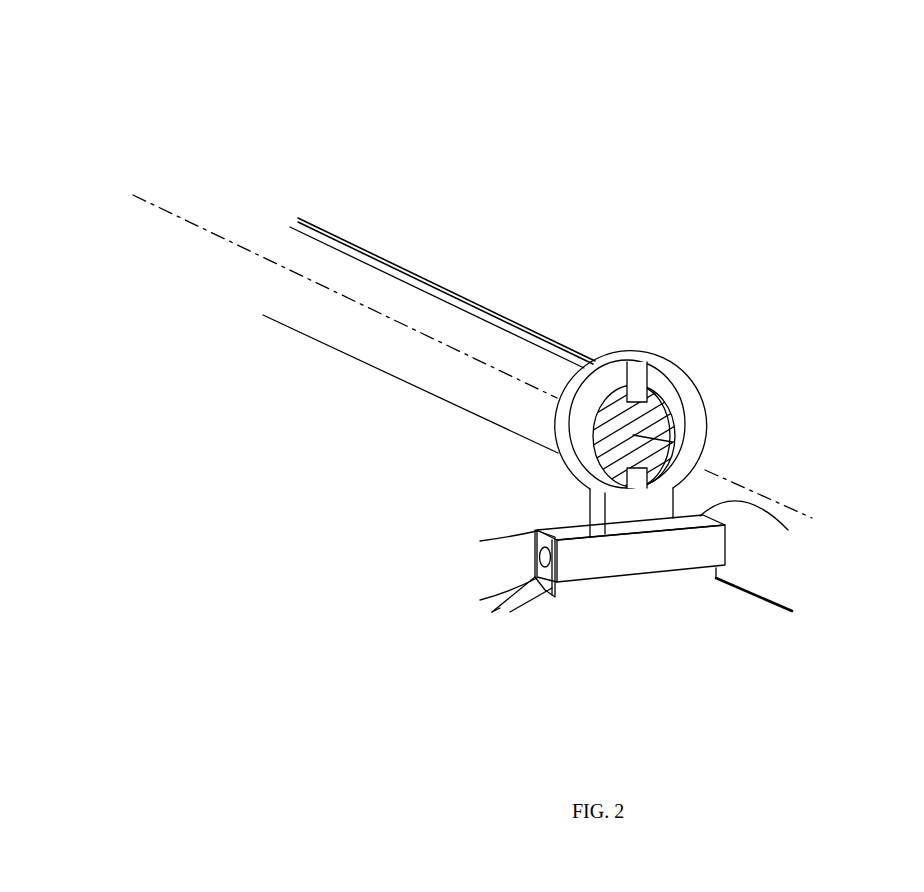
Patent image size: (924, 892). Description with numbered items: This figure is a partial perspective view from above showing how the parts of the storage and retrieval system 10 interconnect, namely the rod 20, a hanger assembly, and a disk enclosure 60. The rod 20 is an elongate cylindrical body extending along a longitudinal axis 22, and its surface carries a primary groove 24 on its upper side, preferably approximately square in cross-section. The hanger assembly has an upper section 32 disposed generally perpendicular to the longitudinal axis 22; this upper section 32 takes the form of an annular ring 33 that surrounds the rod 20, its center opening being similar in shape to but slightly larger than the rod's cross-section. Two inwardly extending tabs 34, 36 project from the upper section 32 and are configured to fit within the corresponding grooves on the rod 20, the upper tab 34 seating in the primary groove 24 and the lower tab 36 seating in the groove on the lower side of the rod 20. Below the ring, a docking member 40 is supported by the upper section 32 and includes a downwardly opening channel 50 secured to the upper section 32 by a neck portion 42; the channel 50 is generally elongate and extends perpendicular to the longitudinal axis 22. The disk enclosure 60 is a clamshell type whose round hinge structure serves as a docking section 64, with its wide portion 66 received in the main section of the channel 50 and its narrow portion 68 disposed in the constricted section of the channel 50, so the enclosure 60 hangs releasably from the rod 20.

The storage and retrieval system 10 is at (556, 180).
The rod 20 is at (367, 283).
The longitudinal axis 22 is at (778, 502).
The primary groove 24 is at (433, 293).
The upper section 32 is at (698, 270).
The annular ring 33 is at (682, 385).
The inwardly extending tab 34 is at (636, 390).
The inwardly extending tab 36 is at (668, 467).
The docking member 40 is at (523, 512).
The neck portion 42 is at (585, 500).
The channel 50 is at (758, 527).
The disk enclosure 60 is at (495, 643).
The docking section 64 is at (505, 563).
The wide portion 66 is at (537, 547).
The narrow portion 68 is at (535, 578).